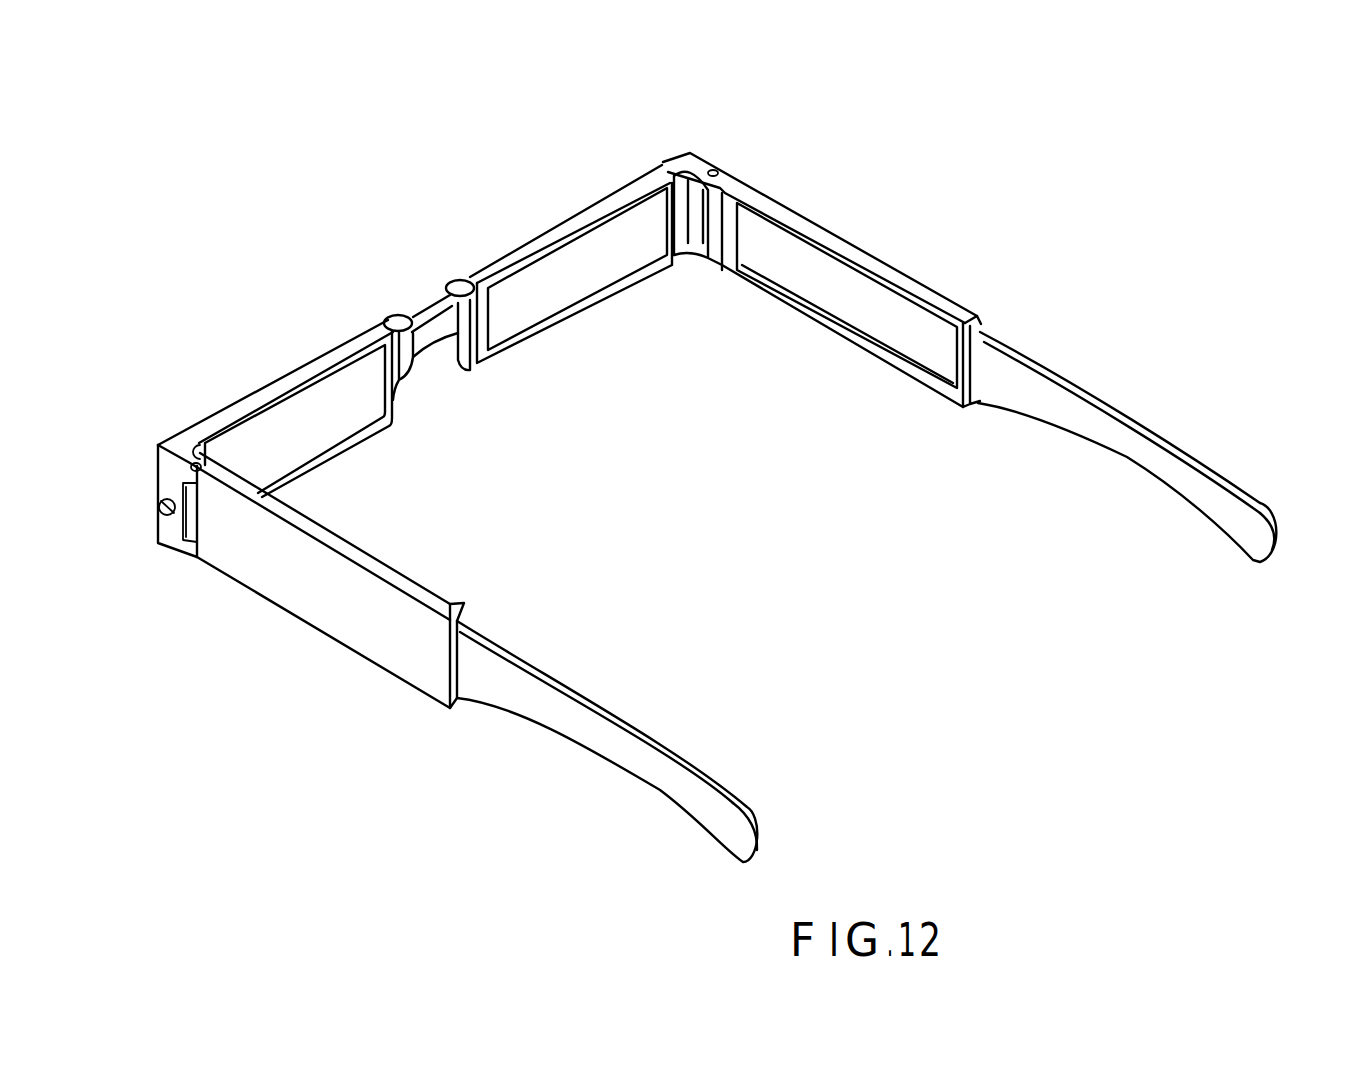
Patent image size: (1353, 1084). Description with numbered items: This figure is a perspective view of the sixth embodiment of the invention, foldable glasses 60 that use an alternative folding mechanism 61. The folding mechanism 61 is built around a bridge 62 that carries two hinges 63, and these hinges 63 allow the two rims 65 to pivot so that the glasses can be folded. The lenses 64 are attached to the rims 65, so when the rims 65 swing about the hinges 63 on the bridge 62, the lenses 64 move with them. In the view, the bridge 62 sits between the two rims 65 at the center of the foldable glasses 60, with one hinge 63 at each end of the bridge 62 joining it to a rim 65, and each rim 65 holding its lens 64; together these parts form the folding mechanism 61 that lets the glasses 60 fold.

The foldable glasses 60 is at (360, 205).
The folding mechanism 61 is at (298, 448).
The bridge 62 is at (427, 307).
The hinges 63 is at (458, 280).
The lenses 64 is at (637, 227).
The rims 65 is at (273, 387).